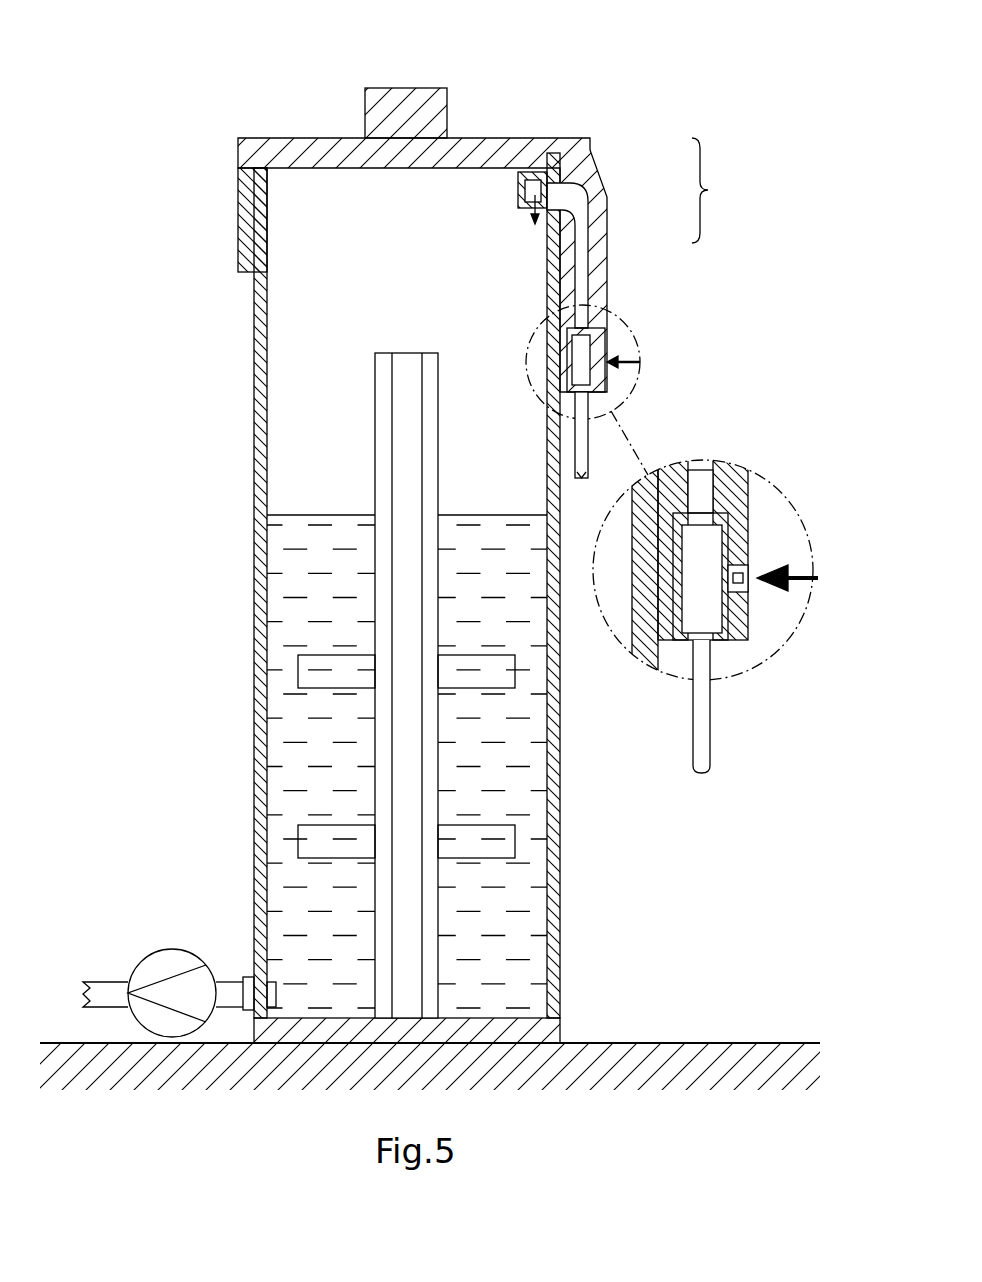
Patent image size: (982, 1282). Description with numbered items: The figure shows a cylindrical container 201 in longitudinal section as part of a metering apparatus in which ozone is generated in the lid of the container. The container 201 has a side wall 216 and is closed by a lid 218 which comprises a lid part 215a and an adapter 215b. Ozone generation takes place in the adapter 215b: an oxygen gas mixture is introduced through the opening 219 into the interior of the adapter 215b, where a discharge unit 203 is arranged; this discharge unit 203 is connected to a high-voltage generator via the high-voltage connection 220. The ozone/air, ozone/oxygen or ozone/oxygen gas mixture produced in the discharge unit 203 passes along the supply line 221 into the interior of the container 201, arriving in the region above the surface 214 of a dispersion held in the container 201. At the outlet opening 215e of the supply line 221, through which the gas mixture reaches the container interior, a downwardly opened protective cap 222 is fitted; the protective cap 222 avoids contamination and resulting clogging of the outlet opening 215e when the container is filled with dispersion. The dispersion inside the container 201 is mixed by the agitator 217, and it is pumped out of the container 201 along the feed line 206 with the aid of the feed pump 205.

The container 201 is at (695, 69).
The discharge unit 203 is at (712, 547).
The feed pump 205 is at (168, 951).
The feed line 206 is at (102, 985).
The surface 214 is at (483, 513).
The lid part 215a is at (592, 155).
The adapter 215b is at (608, 253).
The outlet opening 215e is at (533, 170).
The side wall 216 is at (256, 428).
The agitator 217 is at (385, 433).
The lid 218 is at (723, 190).
The opening 219 is at (745, 582).
The high-voltage connection 220 is at (702, 745).
The supply line 221 is at (700, 478).
The protective cap 222 is at (517, 192).